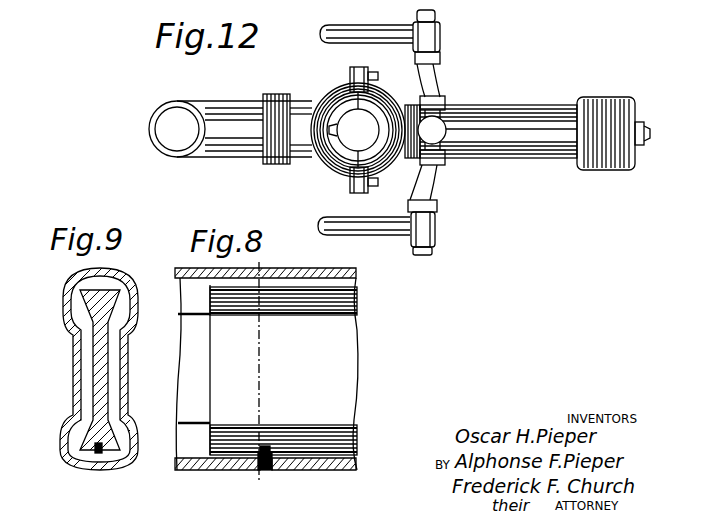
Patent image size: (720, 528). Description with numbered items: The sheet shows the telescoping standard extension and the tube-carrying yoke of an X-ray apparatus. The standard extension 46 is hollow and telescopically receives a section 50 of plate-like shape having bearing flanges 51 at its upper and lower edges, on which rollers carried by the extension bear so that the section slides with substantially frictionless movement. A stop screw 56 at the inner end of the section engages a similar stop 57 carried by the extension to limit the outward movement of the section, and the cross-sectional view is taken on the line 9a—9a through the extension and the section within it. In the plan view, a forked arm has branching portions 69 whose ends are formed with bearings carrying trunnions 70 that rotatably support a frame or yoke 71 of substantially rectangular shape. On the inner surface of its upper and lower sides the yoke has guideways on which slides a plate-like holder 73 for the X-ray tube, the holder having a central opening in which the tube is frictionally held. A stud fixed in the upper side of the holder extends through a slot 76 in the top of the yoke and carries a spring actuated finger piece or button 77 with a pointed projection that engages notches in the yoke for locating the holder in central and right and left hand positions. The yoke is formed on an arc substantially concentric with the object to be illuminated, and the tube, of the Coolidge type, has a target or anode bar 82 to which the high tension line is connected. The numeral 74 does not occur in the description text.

In FIG. 12, the branching portions 69 is at (368, 29).
In FIG. 12, the trunnions 70 is at (440, 14).
In FIG. 12, the frame or yoke 71 is at (431, 78).
In FIG. 12, the plate-like holder 73 is at (428, 170).
In FIG. 12, the tubular handle 74 is at (520, 160).
In FIG. 12, the slot 76 is at (443, 103).
In FIG. 12, the spring actuated finger piece or button 77 is at (455, 155).
In FIG. 12, the target or anode bar 82 is at (640, 145).
In FIG. 9, the standard extension 46 is at (72, 286).
In FIG. 8, the standard extension 46 is at (338, 270).
In FIG. 9, the section 50 is at (88, 370).
In FIG. 8, the section 50 is at (358, 358).
In FIG. 9, the bearing flanges 51 is at (86, 300).
In FIG. 8, the bearing flanges 51 is at (356, 300).
In FIG. 9, the stop screw 56 is at (97, 462).
In FIG. 8, the stop screw 56 is at (245, 468).
In FIG. 8, the stop 57 is at (288, 472).
In FIG. 8, the section line 9a is at (284, 477).